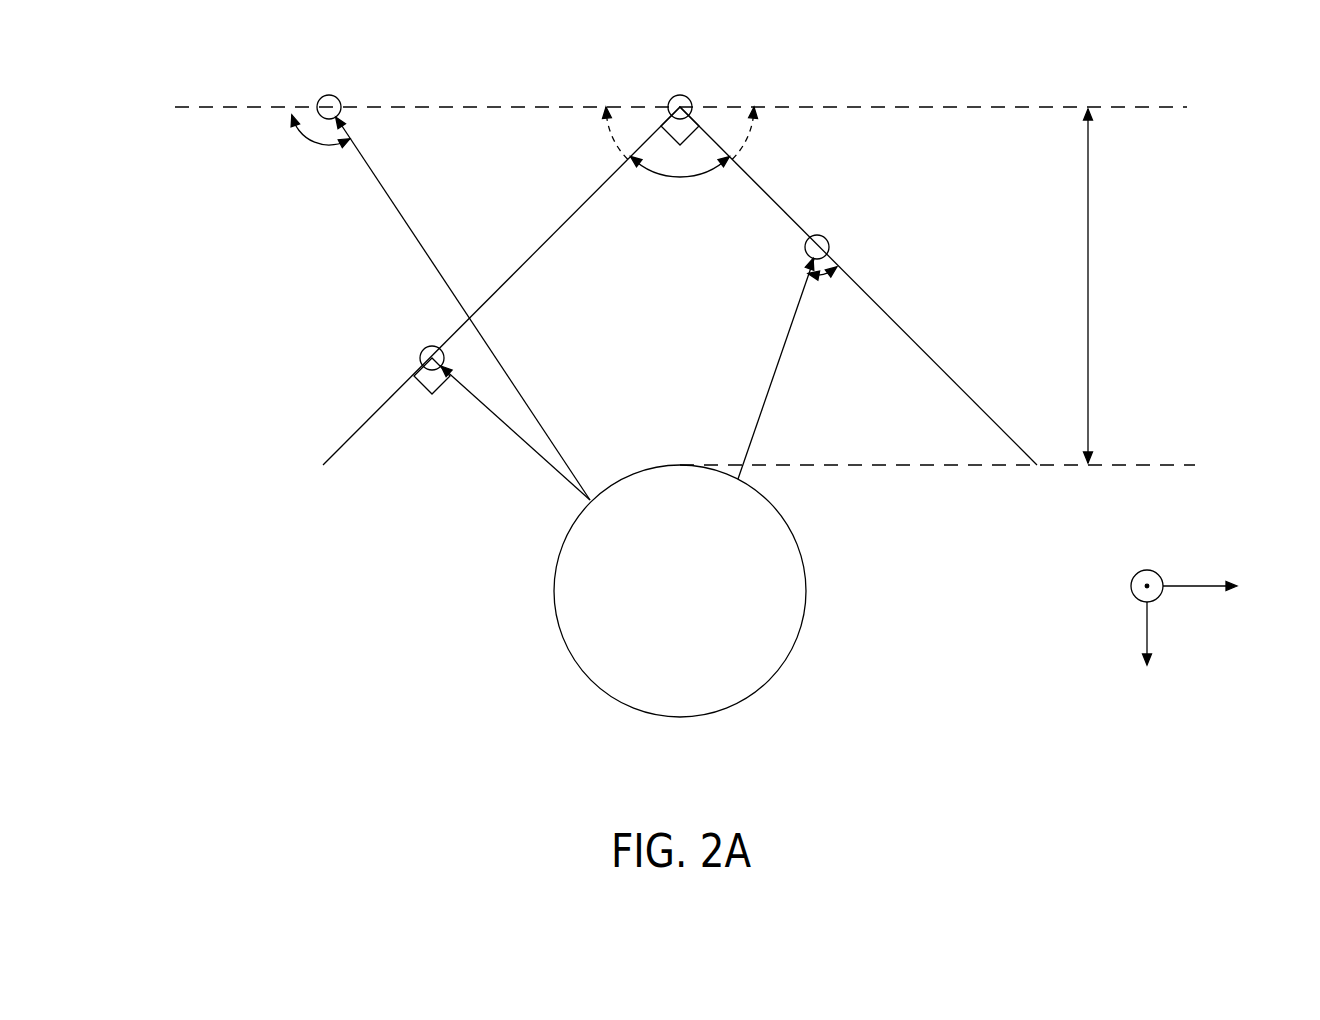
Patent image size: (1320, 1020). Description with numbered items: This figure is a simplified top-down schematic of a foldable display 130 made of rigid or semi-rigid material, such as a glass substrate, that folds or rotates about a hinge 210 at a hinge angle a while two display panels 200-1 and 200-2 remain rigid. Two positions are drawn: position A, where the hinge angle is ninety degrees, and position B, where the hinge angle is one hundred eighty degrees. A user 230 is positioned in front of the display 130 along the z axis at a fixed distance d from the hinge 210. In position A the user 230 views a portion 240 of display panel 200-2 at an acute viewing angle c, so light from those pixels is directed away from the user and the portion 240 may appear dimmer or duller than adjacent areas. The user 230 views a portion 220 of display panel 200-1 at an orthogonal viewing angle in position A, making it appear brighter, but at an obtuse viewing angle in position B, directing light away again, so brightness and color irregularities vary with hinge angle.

The display 130 is at (228, 33).
The display panel 200-1 is at (496, 179).
The display panel 200-2 is at (809, 179).
The hinge 210 is at (680, 142).
The portion of display panel 200-1 220 is at (440, 286).
The user 230 is at (662, 618).
The portion of display panel 200-2 240 is at (807, 357).